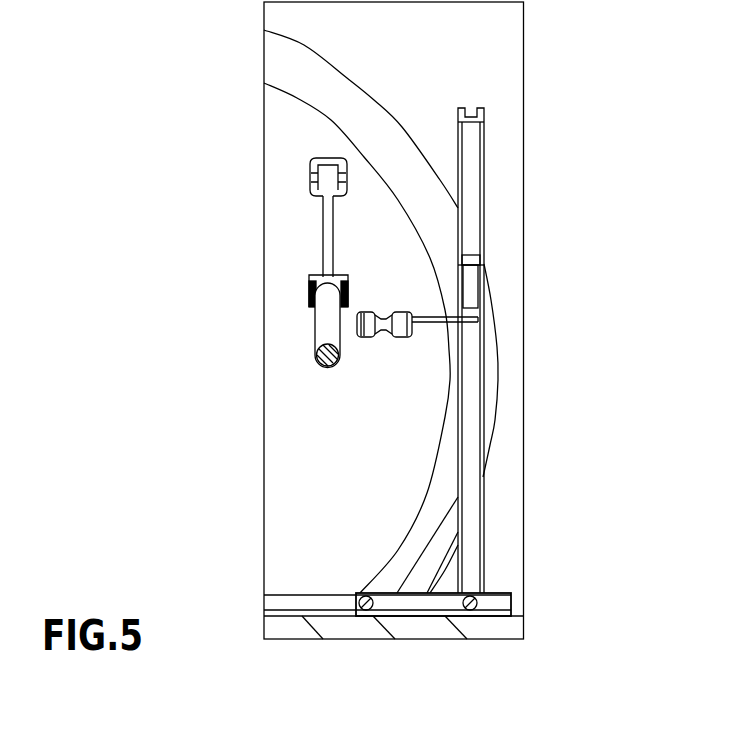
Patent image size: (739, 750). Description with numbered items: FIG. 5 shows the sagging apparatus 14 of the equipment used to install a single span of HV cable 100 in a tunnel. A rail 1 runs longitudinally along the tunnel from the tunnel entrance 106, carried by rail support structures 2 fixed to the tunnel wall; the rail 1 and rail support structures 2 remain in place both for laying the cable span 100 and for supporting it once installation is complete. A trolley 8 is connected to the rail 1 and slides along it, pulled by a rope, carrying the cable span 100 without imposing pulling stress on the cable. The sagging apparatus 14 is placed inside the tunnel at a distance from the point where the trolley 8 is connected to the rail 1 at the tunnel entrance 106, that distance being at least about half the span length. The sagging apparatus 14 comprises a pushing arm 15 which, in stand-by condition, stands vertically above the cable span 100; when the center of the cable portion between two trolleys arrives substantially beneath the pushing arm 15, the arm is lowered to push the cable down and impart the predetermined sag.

The rail 1 is at (315, 157).
The first trolley 8 is at (323, 227).
The single span of HV cable 100 is at (325, 325).
The tunnel entrance 106 is at (377, 255).
The sagging apparatus 14 is at (497, 235).
The pushing arm 15 is at (433, 322).
The rail support structure 2 is at (470, 501).